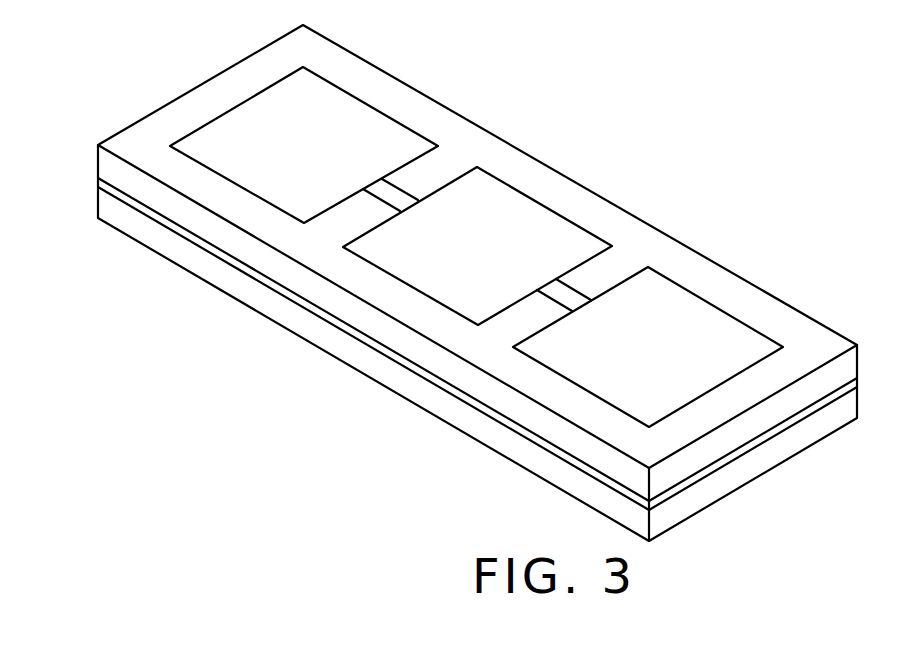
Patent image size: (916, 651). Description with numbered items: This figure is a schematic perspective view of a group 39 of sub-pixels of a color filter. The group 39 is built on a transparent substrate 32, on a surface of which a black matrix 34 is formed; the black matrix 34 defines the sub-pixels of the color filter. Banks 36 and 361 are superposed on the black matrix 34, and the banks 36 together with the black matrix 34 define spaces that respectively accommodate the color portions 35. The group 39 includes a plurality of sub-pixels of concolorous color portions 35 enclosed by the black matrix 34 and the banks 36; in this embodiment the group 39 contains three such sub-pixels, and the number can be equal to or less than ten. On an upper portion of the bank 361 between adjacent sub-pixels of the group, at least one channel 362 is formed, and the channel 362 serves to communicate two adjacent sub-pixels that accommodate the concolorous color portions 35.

The group 39 is at (704, 43).
The bank 36 is at (403, 103).
The bank 361 is at (485, 247).
The channel 362 is at (390, 197).
The color portion 35 is at (670, 312).
The black matrix 34 is at (798, 418).
The transparent substrate 32 is at (743, 480).